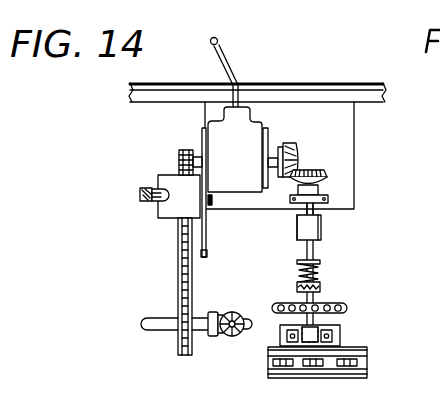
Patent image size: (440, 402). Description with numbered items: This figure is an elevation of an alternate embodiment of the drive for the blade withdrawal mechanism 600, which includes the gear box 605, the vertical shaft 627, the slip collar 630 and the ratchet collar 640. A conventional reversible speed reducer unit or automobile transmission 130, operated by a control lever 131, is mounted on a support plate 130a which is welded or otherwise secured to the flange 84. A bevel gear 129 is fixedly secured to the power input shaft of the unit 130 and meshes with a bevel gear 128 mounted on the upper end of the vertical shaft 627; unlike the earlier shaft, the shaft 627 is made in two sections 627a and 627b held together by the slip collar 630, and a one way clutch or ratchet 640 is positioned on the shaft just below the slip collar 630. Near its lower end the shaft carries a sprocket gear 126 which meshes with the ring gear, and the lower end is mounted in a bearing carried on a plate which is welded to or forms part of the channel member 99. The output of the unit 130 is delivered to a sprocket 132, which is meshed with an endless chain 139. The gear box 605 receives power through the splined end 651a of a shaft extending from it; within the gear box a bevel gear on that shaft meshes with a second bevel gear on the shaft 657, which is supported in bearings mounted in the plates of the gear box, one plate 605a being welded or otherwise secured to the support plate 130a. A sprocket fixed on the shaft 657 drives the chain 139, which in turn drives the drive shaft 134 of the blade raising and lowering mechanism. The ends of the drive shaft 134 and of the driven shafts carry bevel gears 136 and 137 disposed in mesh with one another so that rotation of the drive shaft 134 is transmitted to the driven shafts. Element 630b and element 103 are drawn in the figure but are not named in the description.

The flange 84 is at (366, 102).
The control lever 131 is at (226, 53).
The reversible speed reducer unit or automobile transmission 130 is at (251, 114).
The second bevel gear 129 is at (290, 146).
The bevel gear 128 is at (330, 181).
The support plate 130a is at (343, 153).
The shaft 657 is at (212, 200).
The gear box 605 is at (158, 221).
The plate 605a is at (208, 255).
The blade withdrawal mechanism 600 is at (142, 208).
The end of shaft 651 651a is at (150, 188).
The sprocket 132 is at (177, 153).
The endless chain 139 is at (178, 267).
The drive shaft 134 is at (163, 317).
The bevel gear 136 is at (218, 336).
The bevel gear 137 is at (231, 337).
The vertical shaft 627 is at (314, 250).
The shaft section 627a is at (302, 211).
The slip collar 630 is at (321, 223).
The coupling sleeve 630b is at (297, 231).
The shaft section 627b is at (297, 260).
The one way clutch or ratchet collar 640 is at (320, 284).
The sprocket gear 126 is at (331, 305).
The channel member 99 is at (354, 378).
The slide rail 103 is at (365, 361).